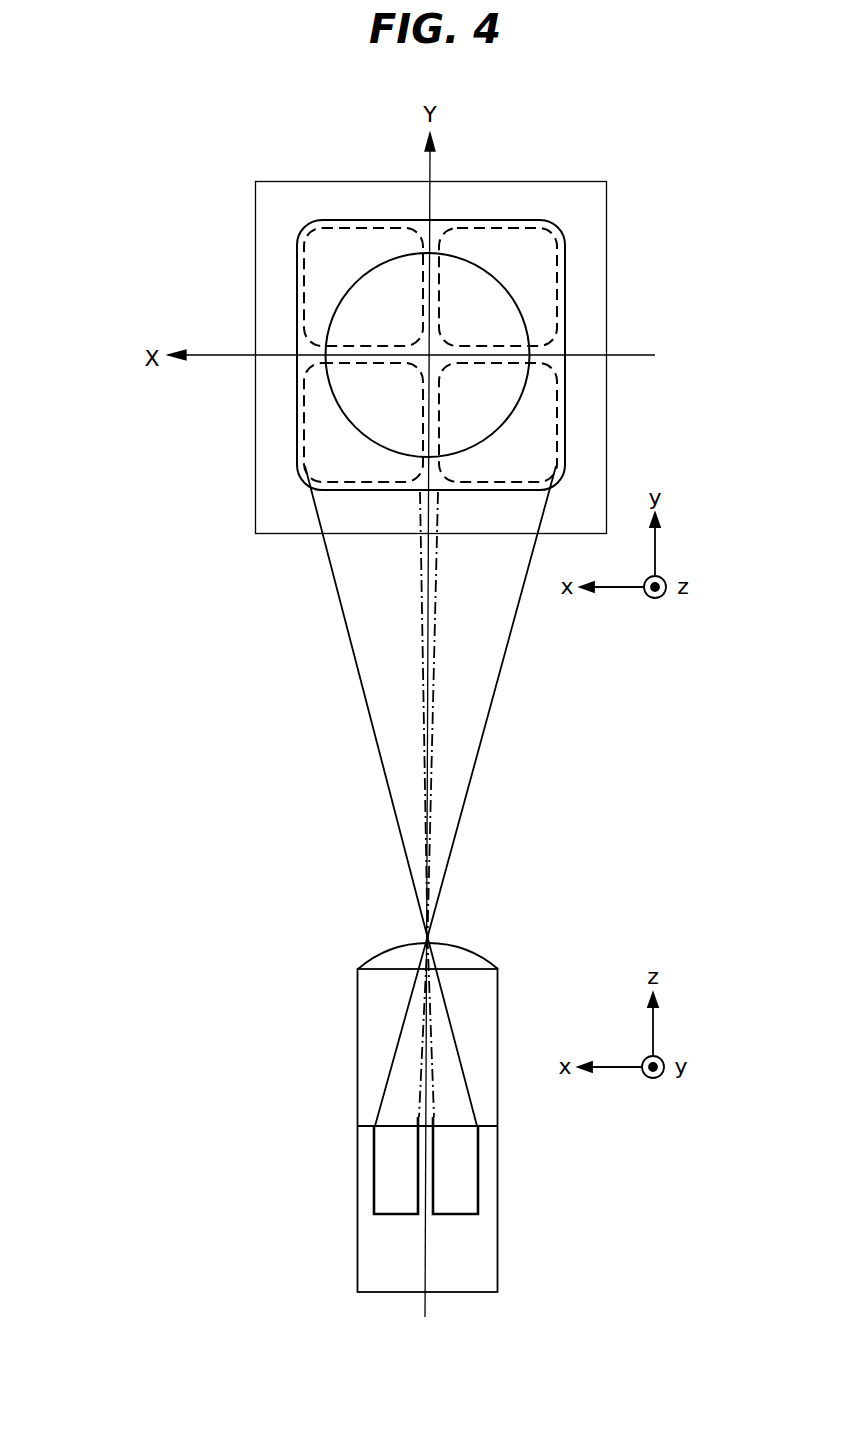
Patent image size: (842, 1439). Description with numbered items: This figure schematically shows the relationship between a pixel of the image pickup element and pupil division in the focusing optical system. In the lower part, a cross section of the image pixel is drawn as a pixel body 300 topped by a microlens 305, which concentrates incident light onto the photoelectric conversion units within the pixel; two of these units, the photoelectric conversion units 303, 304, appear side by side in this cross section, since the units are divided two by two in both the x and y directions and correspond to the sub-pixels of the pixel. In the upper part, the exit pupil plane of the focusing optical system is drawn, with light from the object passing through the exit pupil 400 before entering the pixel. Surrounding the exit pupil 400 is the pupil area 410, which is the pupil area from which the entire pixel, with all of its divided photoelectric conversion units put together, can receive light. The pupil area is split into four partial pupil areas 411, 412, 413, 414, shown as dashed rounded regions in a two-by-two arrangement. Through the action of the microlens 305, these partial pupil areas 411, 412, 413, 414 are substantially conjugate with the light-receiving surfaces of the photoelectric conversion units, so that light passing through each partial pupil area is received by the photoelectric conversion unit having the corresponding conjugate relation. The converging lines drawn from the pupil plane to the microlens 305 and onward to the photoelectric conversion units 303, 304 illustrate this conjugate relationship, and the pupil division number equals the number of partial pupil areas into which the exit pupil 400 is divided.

The light source unit 300 is at (383, 1283).
The photoelectric conversion unit 303 is at (453, 1176).
The photoelectric conversion unit 304 is at (397, 1176).
The microlens 305 is at (472, 952).
The exit pupil 400 is at (530, 333).
The pupil area 410 is at (346, 220).
The partial pupil area 411 is at (368, 388).
The partial pupil area 412 is at (488, 388).
The partial pupil area 413 is at (373, 303).
The partial pupil area 414 is at (488, 303).